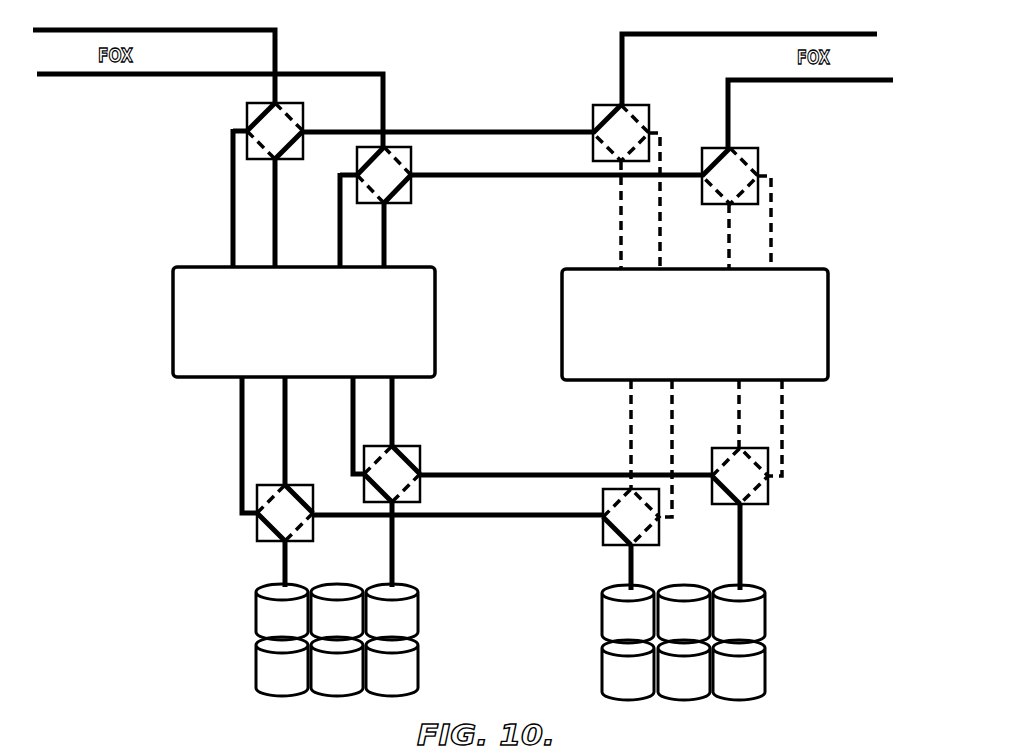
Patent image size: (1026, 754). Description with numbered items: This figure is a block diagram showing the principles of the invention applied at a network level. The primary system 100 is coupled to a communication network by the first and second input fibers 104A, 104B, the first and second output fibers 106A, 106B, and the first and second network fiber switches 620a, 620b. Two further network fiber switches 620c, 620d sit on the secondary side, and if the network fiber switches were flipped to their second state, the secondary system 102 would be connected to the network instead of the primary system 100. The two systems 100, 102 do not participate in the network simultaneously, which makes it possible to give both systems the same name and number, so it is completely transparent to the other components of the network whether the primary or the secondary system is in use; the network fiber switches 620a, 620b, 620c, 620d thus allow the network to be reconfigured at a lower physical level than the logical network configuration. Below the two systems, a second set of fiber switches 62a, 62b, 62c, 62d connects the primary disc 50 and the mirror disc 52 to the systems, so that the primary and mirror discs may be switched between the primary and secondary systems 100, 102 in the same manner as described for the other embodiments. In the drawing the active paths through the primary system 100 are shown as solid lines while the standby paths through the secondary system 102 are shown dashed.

The first input fiber 104A is at (232, 30).
The second input fiber 104B is at (218, 74).
The first output fiber 106A is at (842, 33).
The second output fiber 106B is at (860, 80).
The first network fiber switch 620a is at (303, 110).
The second network fiber switch 620b is at (411, 152).
The network fiber switch 620c is at (635, 105).
The network fiber switch 620d is at (745, 148).
The primary system 100 is at (423, 267).
The secondary system 102 is at (812, 269).
The fiber switch 62a is at (405, 446).
The fiber switch 62b is at (294, 485).
The fiber switch 62c is at (659, 537).
The fiber switch 62d is at (768, 497).
The primary disc 50 is at (419, 626).
The mirror disc 52 is at (766, 625).